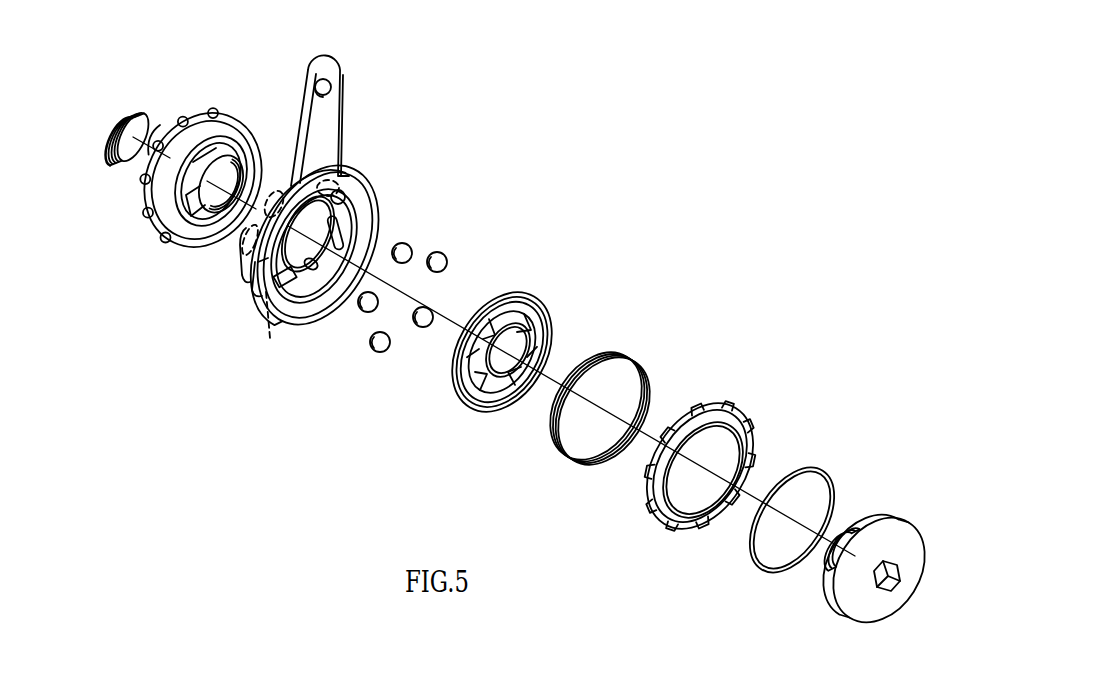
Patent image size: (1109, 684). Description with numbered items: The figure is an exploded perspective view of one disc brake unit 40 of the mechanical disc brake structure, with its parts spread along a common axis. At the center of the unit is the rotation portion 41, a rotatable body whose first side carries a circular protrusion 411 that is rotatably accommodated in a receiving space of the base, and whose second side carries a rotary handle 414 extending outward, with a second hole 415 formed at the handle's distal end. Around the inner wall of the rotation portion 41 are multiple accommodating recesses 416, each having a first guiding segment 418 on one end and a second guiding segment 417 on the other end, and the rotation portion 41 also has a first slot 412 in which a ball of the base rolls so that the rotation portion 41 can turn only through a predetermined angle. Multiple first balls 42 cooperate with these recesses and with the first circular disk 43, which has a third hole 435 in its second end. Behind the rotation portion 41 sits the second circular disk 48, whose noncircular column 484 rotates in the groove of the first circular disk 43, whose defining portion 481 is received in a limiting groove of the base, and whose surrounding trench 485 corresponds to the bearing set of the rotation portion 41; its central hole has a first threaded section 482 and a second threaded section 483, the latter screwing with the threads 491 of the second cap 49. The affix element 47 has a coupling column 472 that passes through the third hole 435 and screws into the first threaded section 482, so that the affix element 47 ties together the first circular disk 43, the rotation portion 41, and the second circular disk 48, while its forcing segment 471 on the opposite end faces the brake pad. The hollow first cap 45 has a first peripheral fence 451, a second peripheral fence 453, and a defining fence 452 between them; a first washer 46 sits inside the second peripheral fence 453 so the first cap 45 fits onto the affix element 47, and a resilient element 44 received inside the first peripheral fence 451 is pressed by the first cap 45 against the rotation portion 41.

The disc brake unit 40 is at (702, 304).
The rotation portion 41 is at (305, 224).
The circular protrusion 411 is at (257, 297).
The first slot 412 is at (243, 265).
The rotary handle 414 is at (327, 131).
The second hole 415 is at (333, 86).
The accommodating recess 416 is at (327, 240).
The second guiding segment 417 is at (281, 275).
The first guiding segment 418 is at (271, 339).
The first ball 42 is at (446, 258).
The first circular disk 43 is at (517, 343).
The third hole 435 is at (525, 357).
The resilient element 44 is at (613, 353).
The first cap 45 is at (697, 472).
The first peripheral fence 451 is at (662, 504).
The defining fence 452 is at (720, 518).
The second peripheral fence 453 is at (747, 472).
The first washer 46 is at (818, 468).
The affix element 47 is at (877, 572).
The forcing segment 471 is at (873, 608).
The coupling column 472 is at (852, 530).
The second circular disk 48 is at (180, 152).
The defining portion 481 is at (147, 198).
The first threaded section 482 is at (246, 162).
The second threaded section 483 is at (222, 214).
The noncircular column 484 is at (178, 222).
The surrounding trench 485 is at (230, 133).
The second cap 49 is at (131, 126).
The threads 491 is at (118, 115).